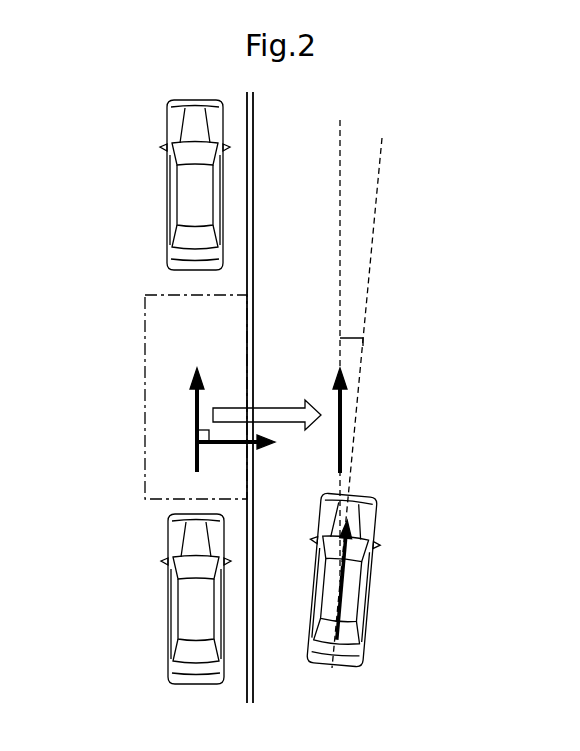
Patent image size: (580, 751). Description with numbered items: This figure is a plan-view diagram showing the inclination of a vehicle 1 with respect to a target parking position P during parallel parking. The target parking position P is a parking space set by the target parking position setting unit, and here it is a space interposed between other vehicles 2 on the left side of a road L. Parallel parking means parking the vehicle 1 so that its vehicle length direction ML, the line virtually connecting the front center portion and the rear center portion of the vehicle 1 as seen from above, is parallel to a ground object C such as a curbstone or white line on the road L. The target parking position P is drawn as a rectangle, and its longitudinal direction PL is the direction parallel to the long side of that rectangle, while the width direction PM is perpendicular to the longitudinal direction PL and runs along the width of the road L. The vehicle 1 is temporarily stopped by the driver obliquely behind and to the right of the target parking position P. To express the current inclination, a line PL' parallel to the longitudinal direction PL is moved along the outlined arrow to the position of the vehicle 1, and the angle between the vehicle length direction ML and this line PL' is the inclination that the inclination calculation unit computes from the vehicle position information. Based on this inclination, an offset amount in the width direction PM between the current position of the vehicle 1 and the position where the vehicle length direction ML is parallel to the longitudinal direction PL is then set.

The vehicle 1 is at (366, 581).
The other vehicles 2 is at (193, 201).
The ground object C is at (249, 177).
The road L is at (406, 152).
The target parking position P is at (145, 361).
The longitudinal direction PL is at (147, 420).
The line parallel to the longitudinal direction PL' is at (382, 420).
The width direction PM is at (226, 445).
The vehicle length direction ML is at (356, 556).